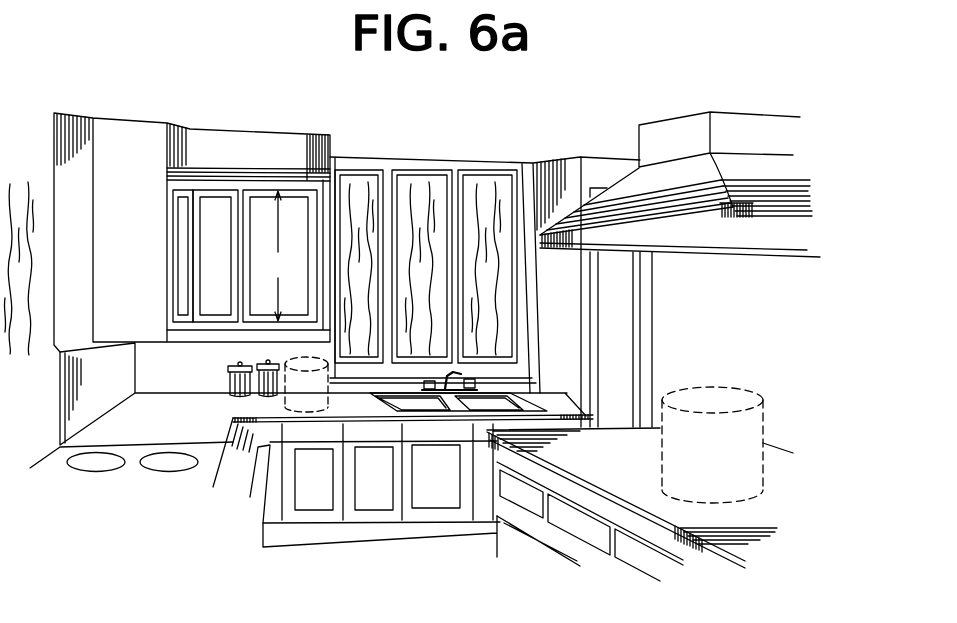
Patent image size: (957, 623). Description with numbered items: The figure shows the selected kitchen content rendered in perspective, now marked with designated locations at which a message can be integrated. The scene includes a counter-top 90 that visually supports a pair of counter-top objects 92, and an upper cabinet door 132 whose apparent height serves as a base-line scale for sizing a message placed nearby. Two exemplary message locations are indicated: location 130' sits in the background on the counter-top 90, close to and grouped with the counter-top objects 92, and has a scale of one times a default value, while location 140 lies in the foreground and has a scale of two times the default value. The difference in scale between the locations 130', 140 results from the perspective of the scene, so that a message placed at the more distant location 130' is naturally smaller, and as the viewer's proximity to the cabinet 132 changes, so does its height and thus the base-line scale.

The cabinet door 132 is at (260, 203).
The counter-top 90 is at (128, 425).
The counter-top objects 92 is at (226, 381).
The location 130' is at (324, 423).
The location 140 is at (717, 395).